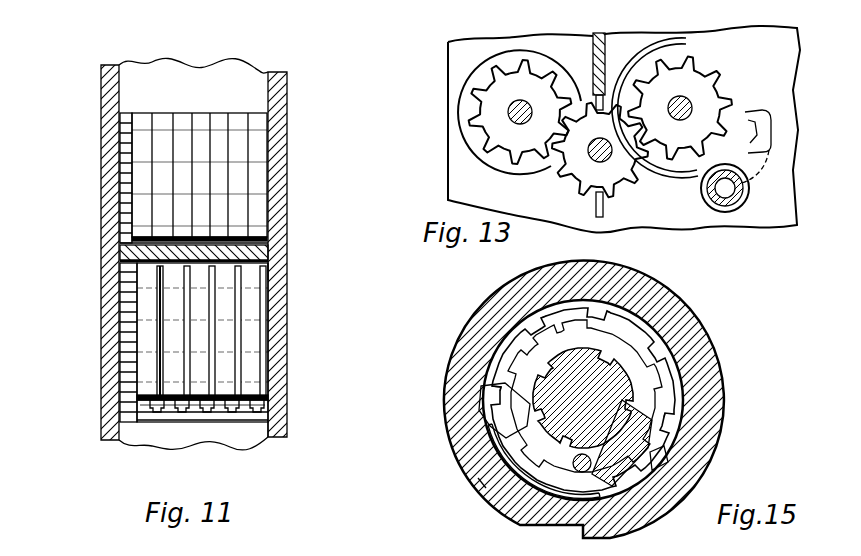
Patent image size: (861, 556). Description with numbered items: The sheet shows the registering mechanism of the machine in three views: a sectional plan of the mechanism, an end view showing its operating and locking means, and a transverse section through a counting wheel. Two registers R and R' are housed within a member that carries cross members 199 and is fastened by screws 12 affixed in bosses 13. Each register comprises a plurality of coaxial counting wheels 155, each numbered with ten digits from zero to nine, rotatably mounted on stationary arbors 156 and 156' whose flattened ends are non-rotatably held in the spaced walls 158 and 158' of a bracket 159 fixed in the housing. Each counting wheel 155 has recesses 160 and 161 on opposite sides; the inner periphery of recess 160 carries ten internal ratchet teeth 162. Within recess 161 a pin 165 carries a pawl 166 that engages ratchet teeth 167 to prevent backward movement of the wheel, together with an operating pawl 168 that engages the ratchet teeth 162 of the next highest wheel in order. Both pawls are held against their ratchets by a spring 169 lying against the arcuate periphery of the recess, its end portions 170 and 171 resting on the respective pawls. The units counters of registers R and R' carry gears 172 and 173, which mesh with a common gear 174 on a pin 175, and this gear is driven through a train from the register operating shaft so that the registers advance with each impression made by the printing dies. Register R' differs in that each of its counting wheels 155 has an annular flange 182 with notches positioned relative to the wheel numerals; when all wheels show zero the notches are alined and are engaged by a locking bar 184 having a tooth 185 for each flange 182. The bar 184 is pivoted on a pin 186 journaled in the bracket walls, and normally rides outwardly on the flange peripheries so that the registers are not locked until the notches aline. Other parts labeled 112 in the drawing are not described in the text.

In FIG. 11, the screws 12 is at (66, 316).
In FIG. 11, the bosses 13 is at (135, 52).
In FIG. 15, the frame member 112 is at (590, 552).
In FIG. 11, the counting wheels 155 is at (214, 113).
In FIG. 13, the counting wheels 155 is at (624, 129).
In FIG. 15, the counting wheels 155 is at (482, 312).
In FIG. 13, the arbor 156 is at (464, 129).
In FIG. 13, the arbor 156' is at (730, 94).
In FIG. 11, the wall 158 is at (92, 342).
In FIG. 11, the wall 158' is at (310, 262).
In FIG. 11, the bracket 159 is at (259, 431).
In FIG. 15, the recess 160 is at (635, 345).
In FIG. 15, the recess 161 is at (655, 318).
In FIG. 15, the internal ratchet teeth 162 is at (545, 300).
In FIG. 15, the pin 165 is at (530, 518).
In FIG. 15, the pawl 166 is at (628, 432).
In FIG. 15, the ratchet teeth 167 is at (590, 350).
In FIG. 15, the operating pawl 168 is at (505, 400).
In FIG. 15, the spring 169 is at (595, 500).
In FIG. 15, the end portion 170 is at (660, 455).
In FIG. 15, the end portion 171 is at (480, 482).
In FIG. 11, the gear 172 is at (118, 143).
In FIG. 13, the gear 172 is at (492, 87).
In FIG. 11, the gear 173 is at (133, 398).
In FIG. 13, the gear 173 is at (690, 72).
In FIG. 13, the common gear 174 is at (636, 165).
In FIG. 13, the pin 175 is at (592, 158).
In FIG. 11, the annular flange 182 is at (160, 347).
In FIG. 11, the locking bar 184 is at (160, 413).
In FIG. 13, the locking bar 184 is at (757, 138).
In FIG. 11, the tooth 185 is at (244, 404).
In FIG. 13, the tooth 185 is at (742, 127).
In FIG. 13, the pin 186 is at (748, 192).
In FIG. 11, the cross members 199 is at (256, 258).
In FIG. 11, the register R is at (221, 176).
In FIG. 13, the register R is at (516, 112).
In FIG. 11, the register R' is at (232, 342).
In FIG. 13, the register R' is at (686, 108).